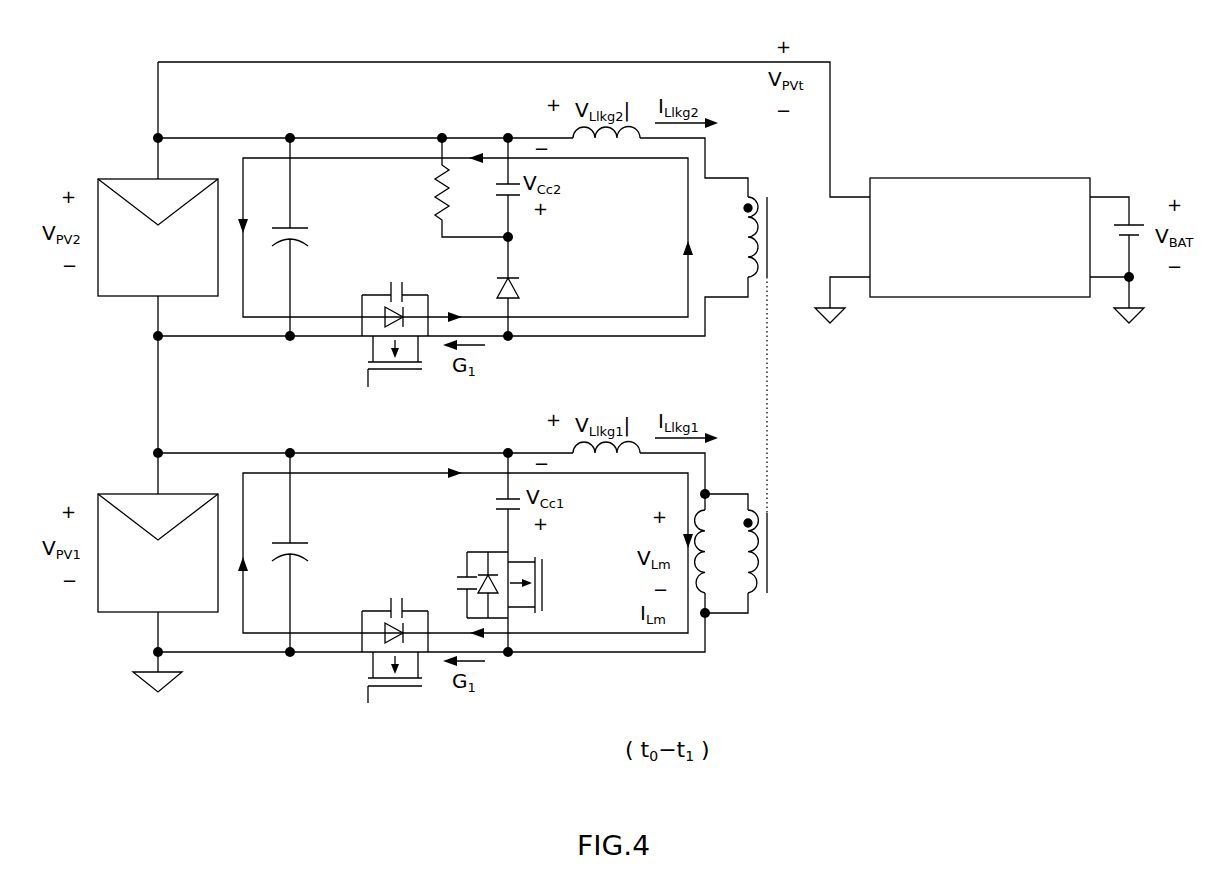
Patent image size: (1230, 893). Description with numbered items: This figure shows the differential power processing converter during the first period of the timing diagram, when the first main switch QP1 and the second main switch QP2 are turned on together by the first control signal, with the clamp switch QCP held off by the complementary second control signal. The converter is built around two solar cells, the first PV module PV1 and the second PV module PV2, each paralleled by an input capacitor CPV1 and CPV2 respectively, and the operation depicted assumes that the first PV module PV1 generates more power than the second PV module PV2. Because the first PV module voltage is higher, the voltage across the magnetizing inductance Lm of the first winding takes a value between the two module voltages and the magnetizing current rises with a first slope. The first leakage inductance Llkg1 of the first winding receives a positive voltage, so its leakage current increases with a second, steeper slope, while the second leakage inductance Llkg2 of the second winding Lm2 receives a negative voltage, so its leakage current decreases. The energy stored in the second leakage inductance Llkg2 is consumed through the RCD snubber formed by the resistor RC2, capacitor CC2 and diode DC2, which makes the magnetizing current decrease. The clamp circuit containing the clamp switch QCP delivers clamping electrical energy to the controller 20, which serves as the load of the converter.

The controller 20 is at (1053, 178).
The first PV module PV1 is at (158, 553).
The second PV module PV2 is at (158, 237).
The first input capacitor CPV1 is at (314, 552).
The second input capacitor CPV2 is at (314, 237).
The first main switch QP1 is at (395, 659).
The second main switch QP2 is at (395, 343).
The clamp switch QCP is at (519, 585).
The RCD snubber resistor RC2 is at (446, 187).
The RCD snubber capacitor CC2 is at (487, 187).
The RCD snubber diode DC2 is at (530, 286).
The first leakage inductance Llkg1 is at (606, 463).
The second leakage inductance Llkg2 is at (606, 148).
The magnetizing inductance Lm is at (727, 551).
The second winding Lm2 is at (733, 237).